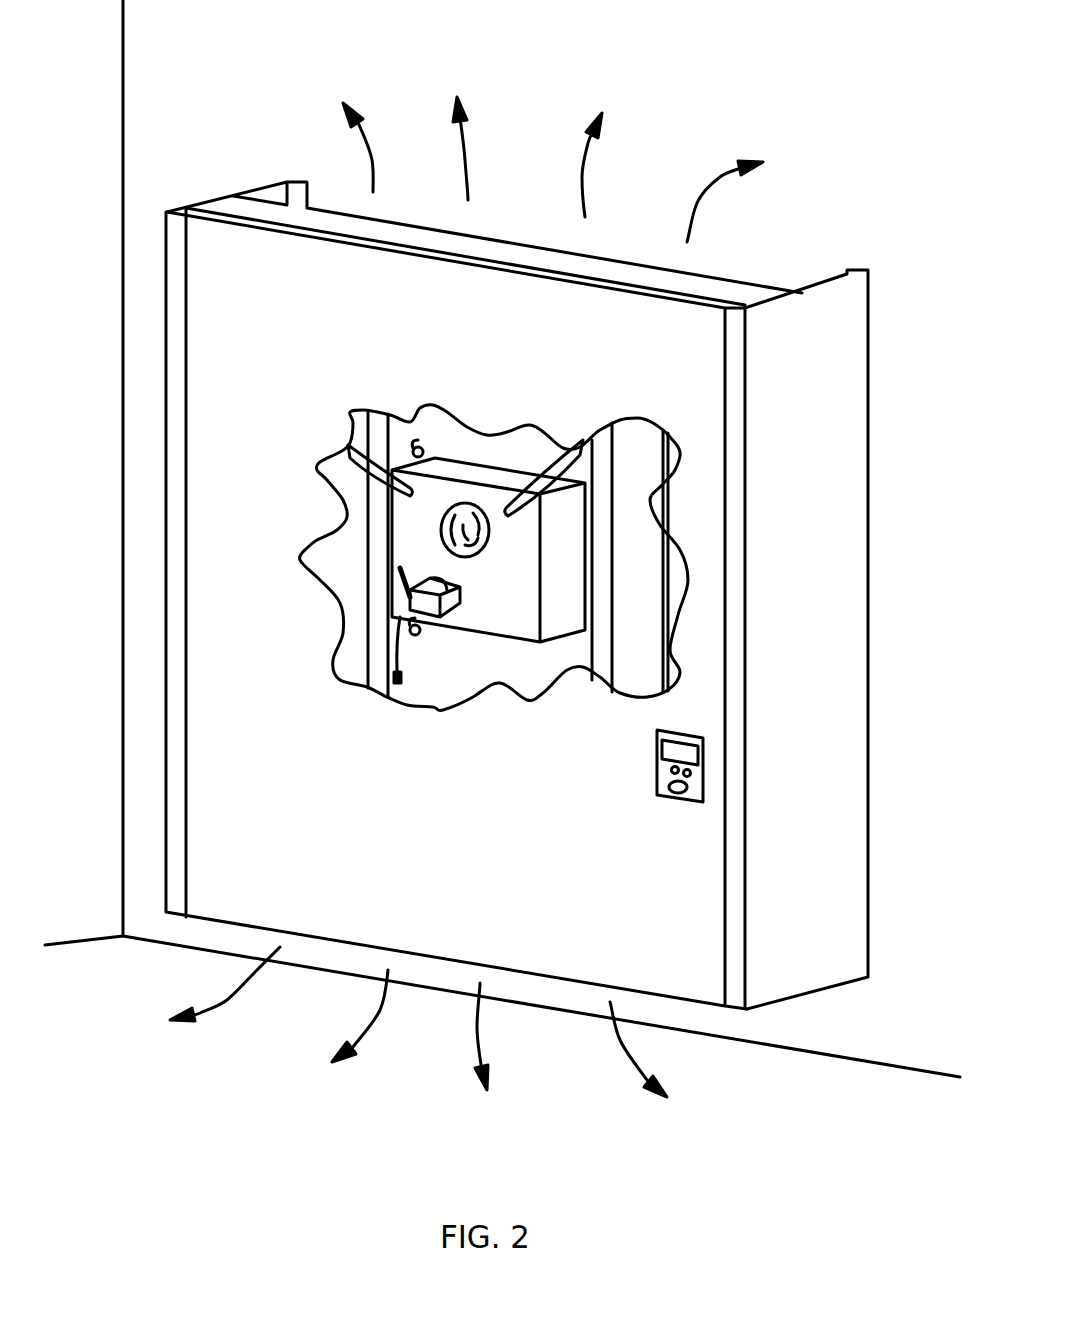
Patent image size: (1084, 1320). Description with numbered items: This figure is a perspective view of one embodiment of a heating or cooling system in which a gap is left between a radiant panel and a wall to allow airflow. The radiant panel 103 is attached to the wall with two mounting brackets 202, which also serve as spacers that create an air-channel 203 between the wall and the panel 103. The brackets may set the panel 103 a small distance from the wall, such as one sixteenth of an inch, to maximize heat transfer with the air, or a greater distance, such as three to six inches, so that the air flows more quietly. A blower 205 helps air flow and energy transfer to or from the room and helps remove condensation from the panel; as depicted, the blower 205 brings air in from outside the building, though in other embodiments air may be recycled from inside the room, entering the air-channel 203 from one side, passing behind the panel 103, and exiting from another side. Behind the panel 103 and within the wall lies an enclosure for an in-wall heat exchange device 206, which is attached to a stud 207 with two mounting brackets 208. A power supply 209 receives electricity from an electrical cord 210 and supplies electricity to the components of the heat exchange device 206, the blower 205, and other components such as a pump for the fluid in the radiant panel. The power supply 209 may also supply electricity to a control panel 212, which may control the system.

The radiant panel 103 is at (225, 459).
The mounting brackets 202 is at (262, 182).
The air-channel 203 is at (407, 210).
The blower 205 is at (466, 520).
The in-wall heat exchange device 206 is at (507, 622).
The stud 207 is at (408, 421).
The mounting brackets 208 is at (418, 449).
The power supply 209 is at (403, 600).
The electrical cord 210 is at (390, 662).
The control panel 212 is at (660, 797).